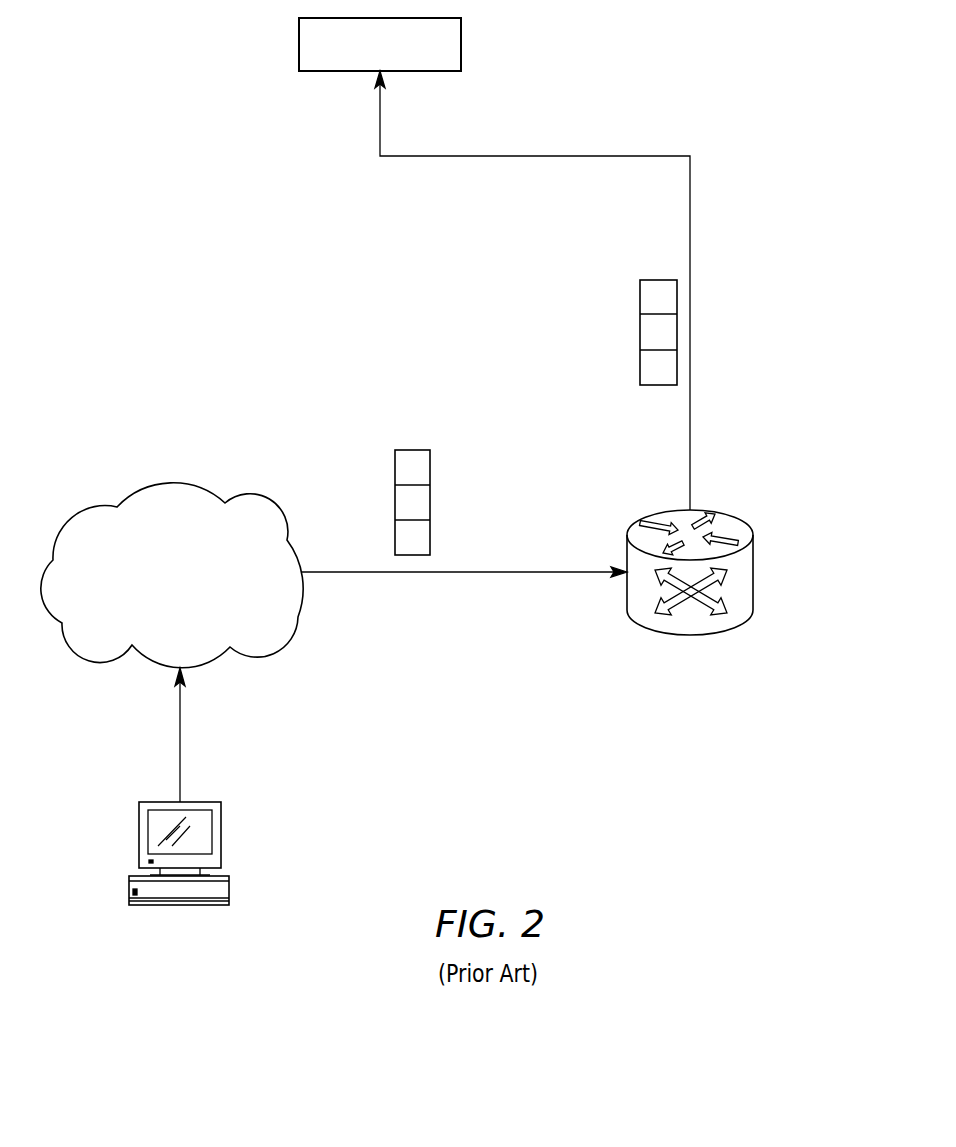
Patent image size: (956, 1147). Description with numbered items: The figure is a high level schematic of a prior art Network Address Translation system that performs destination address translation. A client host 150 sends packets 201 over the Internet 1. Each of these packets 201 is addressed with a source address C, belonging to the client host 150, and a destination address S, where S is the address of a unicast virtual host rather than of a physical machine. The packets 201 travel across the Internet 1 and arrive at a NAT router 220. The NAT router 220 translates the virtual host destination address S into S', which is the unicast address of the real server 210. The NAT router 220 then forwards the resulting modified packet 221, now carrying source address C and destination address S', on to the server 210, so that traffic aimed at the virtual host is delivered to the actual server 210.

The Internet 1 is at (167, 584).
The client host 150 is at (222, 836).
The packets 201 is at (431, 465).
The server 210 is at (462, 50).
The NAT router 220 is at (755, 590).
The modified packet 221 is at (638, 299).